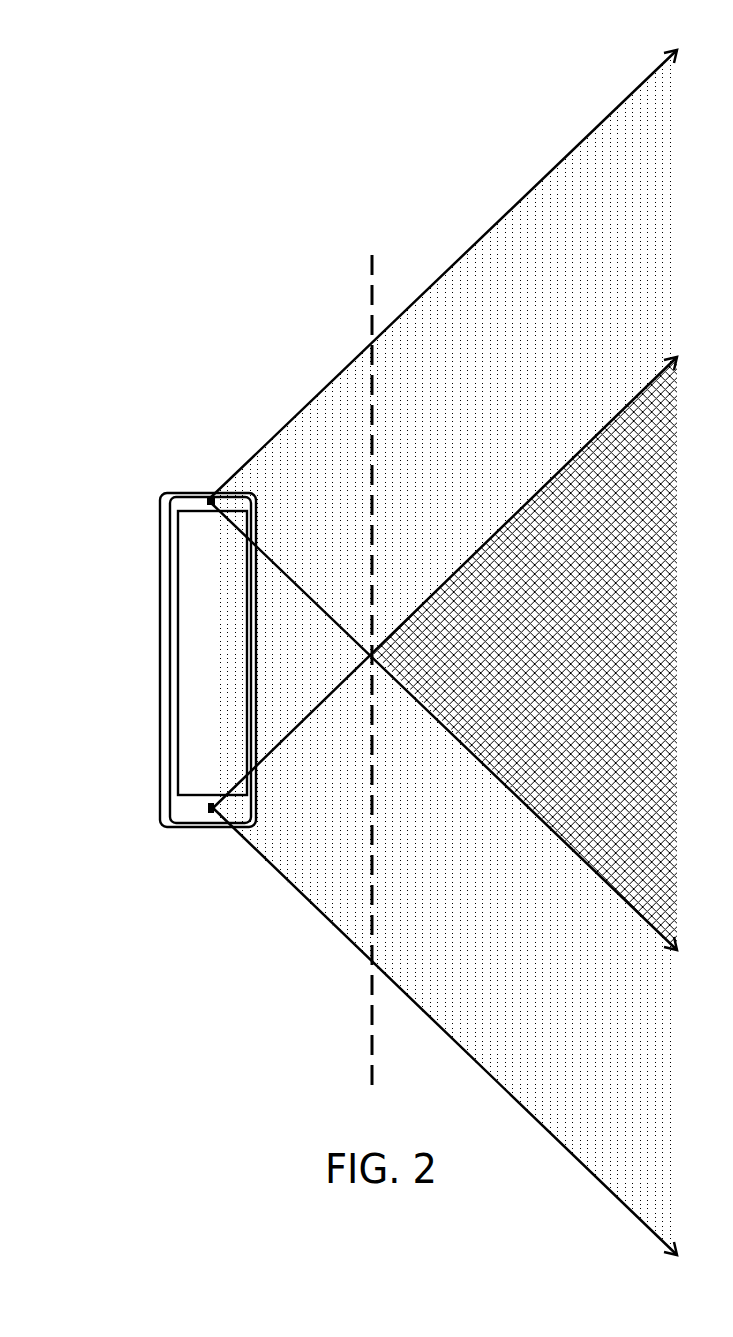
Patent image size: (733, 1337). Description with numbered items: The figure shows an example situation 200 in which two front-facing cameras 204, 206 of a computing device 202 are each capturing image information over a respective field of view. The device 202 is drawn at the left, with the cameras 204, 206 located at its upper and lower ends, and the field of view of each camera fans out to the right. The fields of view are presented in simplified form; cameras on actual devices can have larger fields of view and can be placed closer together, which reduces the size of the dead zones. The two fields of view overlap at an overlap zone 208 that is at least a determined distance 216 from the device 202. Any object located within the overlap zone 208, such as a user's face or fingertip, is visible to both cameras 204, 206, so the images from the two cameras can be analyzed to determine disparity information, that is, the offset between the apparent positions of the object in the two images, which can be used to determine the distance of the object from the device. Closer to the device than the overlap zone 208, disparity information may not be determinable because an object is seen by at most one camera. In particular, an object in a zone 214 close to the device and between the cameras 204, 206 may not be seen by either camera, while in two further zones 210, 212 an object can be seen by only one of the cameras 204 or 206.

The example situation 200 is at (88, 197).
The computing device 202 is at (167, 493).
The front-facing camera 204 is at (208, 497).
The front-facing camera 206 is at (212, 812).
The overlap zone 208 is at (524, 653).
The zone 210 is at (440, 426).
The zone 212 is at (440, 880).
The zone close to the device 214 is at (292, 662).
The determined distance 216 is at (372, 975).